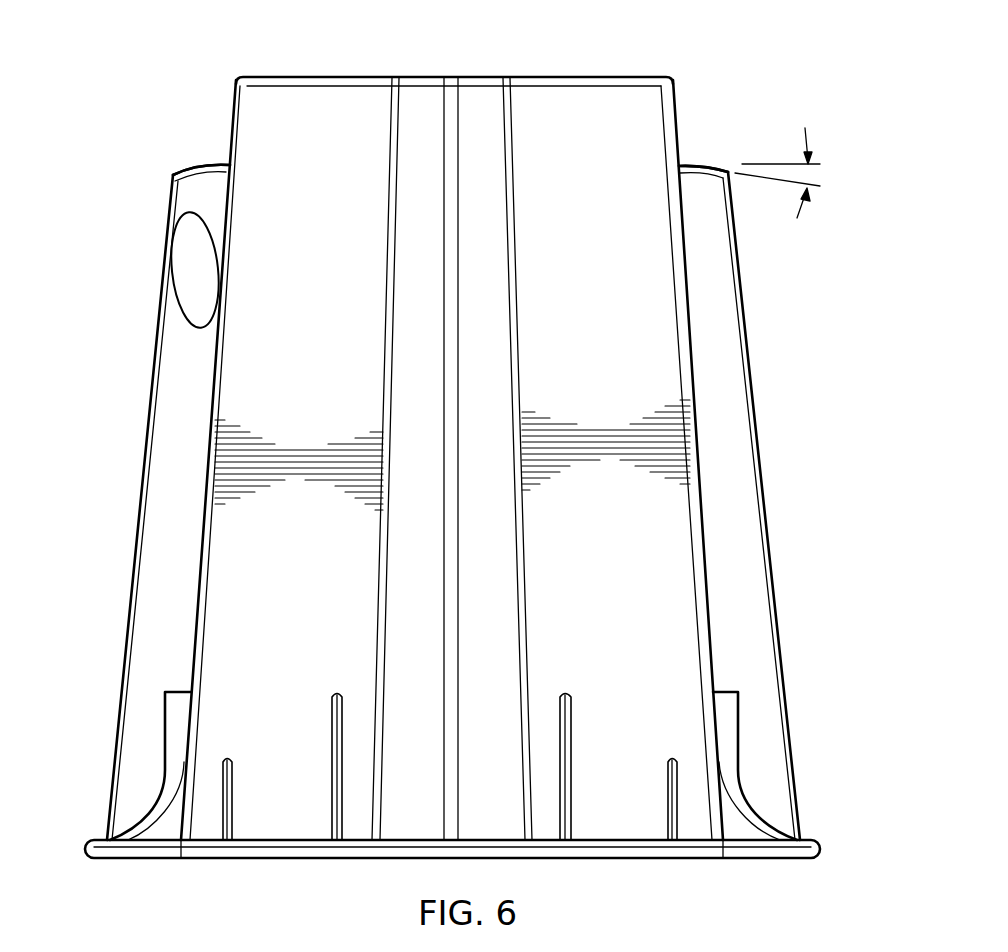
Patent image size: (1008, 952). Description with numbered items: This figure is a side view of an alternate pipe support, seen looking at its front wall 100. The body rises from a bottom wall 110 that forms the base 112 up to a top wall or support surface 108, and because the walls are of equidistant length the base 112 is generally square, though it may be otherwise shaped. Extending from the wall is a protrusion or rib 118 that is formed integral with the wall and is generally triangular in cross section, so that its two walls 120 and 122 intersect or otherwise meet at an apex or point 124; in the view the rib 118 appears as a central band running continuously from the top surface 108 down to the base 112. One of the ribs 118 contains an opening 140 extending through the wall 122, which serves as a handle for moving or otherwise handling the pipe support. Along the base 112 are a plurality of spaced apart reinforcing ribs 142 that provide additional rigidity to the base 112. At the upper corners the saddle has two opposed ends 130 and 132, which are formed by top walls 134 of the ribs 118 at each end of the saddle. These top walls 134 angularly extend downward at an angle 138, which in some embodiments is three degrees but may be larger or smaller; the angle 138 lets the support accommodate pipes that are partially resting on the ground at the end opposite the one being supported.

The front wall 100 is at (331, 96).
The top wall or support surface 108 is at (586, 90).
The bottom wall 110 is at (762, 859).
The base 112 is at (804, 839).
The rib 118 is at (152, 373).
The wall of rib 120 is at (412, 92).
The wall of rib 122 is at (483, 92).
The apex 124 is at (450, 290).
The opposed end 130 is at (172, 176).
The opposed end 132 is at (731, 171).
The top wall 134 is at (203, 167).
The angle 138 is at (810, 137).
The opening 140 is at (182, 280).
The reinforcing rib 142 is at (172, 728).